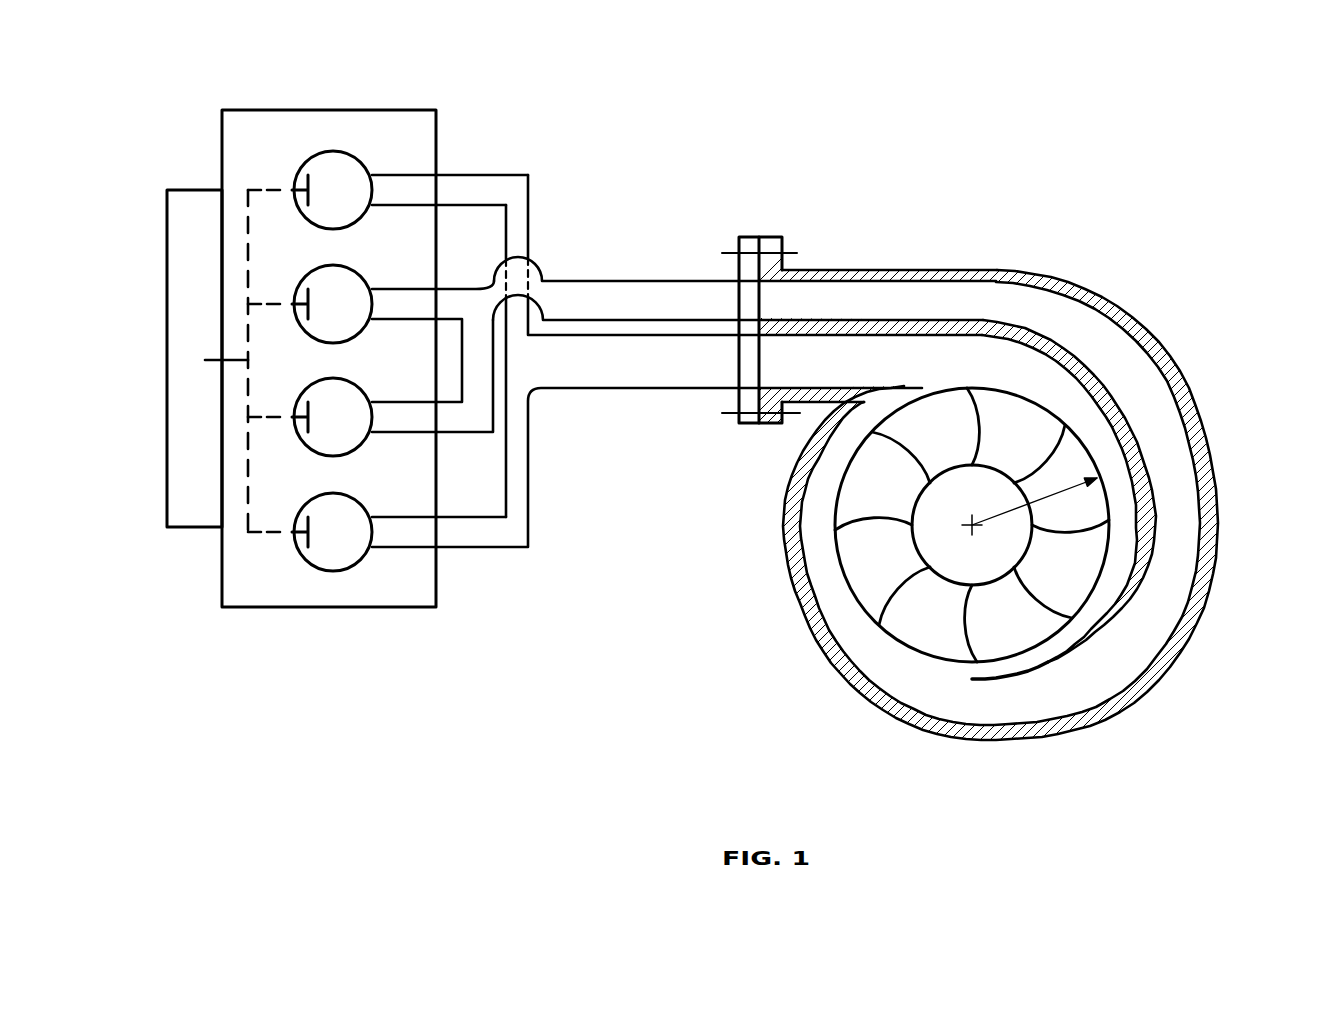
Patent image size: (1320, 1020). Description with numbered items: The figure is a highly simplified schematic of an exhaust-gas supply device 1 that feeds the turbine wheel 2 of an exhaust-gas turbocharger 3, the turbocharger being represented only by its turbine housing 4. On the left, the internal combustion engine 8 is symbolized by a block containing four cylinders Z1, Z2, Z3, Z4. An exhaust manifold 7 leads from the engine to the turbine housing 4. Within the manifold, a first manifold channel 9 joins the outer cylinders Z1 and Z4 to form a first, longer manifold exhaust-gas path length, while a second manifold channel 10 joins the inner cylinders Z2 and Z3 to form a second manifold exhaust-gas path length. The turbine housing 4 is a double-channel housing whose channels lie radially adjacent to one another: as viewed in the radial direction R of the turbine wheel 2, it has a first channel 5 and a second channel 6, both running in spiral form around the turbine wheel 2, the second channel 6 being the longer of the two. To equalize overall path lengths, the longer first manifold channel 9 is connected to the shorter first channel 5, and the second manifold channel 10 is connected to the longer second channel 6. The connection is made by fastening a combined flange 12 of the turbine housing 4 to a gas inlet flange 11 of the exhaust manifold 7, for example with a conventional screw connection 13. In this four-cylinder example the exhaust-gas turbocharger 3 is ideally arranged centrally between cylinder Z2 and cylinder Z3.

The exhaust-gas supply device 1 is at (797, 177).
The turbine wheel 2 is at (917, 635).
The exhaust-gas turbocharger 3 is at (1243, 392).
The turbine housing 4 is at (1088, 287).
The first channel 5 is at (1117, 463).
The second channel 6 is at (1130, 362).
The exhaust manifold 7 is at (499, 150).
The internal combustion engine 8 is at (368, 118).
The first manifold channel 9 is at (522, 207).
The second manifold channel 10 is at (632, 298).
The gas inlet flange 11 is at (747, 237).
The combined flange 12 is at (770, 237).
The screw connection 13 is at (745, 423).
The radial direction R is at (1052, 498).
The cylinder Z1 is at (330, 553).
The cylinder Z2 is at (317, 440).
The cylinder Z3 is at (317, 280).
The cylinder Z4 is at (318, 167).